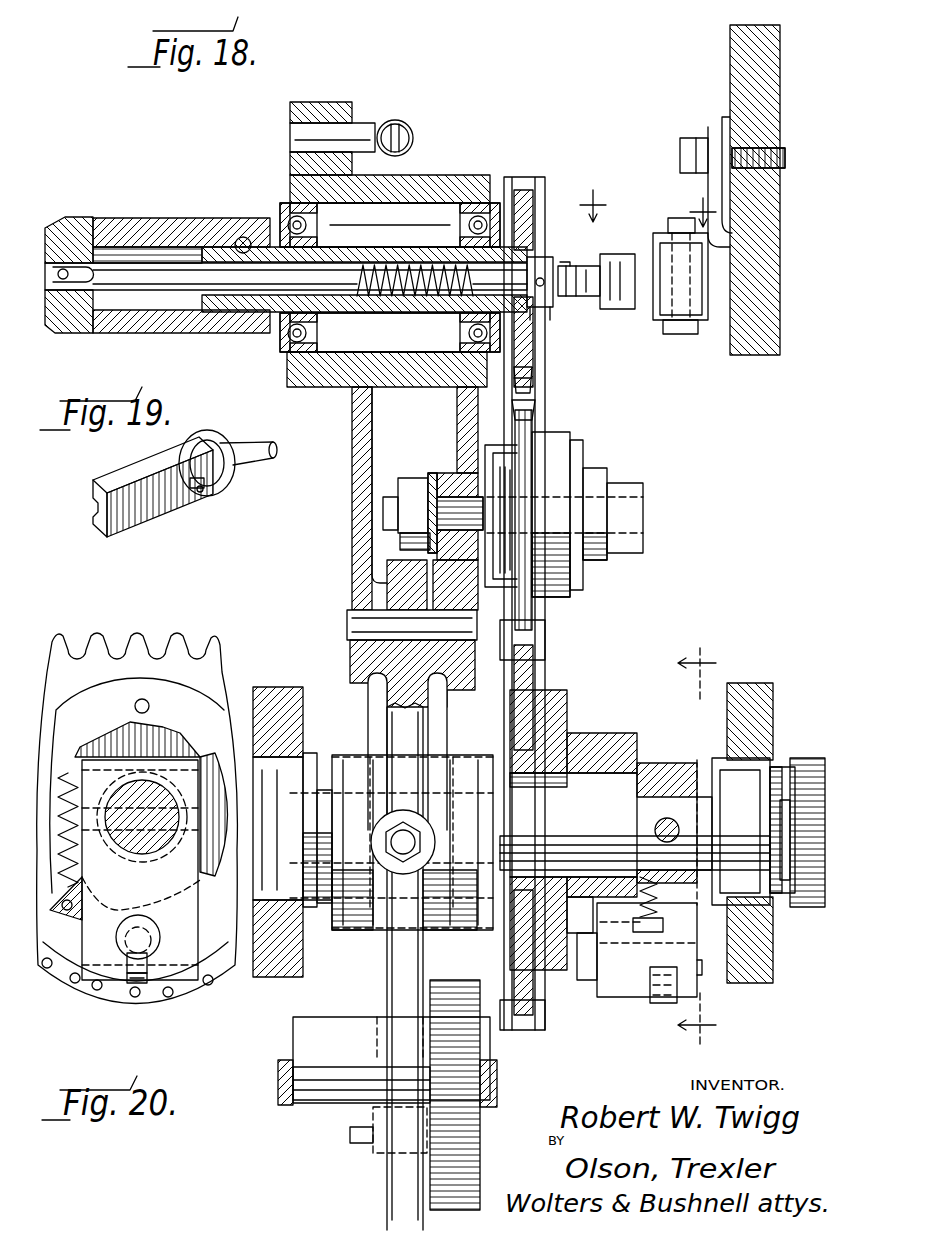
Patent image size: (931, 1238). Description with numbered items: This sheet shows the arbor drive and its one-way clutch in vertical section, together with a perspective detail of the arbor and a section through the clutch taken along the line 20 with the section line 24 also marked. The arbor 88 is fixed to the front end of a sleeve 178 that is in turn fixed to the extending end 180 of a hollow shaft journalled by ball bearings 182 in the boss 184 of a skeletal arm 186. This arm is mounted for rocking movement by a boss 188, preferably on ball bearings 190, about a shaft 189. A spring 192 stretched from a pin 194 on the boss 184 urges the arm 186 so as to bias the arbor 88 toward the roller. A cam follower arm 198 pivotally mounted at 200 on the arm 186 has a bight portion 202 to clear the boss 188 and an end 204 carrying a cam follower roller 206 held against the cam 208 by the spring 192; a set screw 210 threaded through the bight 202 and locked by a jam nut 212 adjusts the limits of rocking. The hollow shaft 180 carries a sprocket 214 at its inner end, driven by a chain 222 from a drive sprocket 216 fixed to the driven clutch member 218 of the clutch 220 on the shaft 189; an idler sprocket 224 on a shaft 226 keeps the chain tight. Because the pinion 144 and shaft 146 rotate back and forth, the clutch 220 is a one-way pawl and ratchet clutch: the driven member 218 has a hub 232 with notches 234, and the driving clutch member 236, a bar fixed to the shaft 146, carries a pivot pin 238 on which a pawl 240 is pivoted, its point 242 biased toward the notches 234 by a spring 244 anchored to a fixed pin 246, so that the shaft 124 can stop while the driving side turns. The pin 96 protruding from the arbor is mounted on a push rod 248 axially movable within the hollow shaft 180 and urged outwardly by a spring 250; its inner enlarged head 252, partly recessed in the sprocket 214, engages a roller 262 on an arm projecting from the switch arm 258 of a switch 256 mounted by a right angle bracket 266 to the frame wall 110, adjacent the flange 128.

In FIG. 18, the section line 20- 20 is at (711, 837).
In FIG. 18, the section line 24- 24 is at (648, 194).
In FIG. 18, the arbor 88 is at (55, 226).
In FIG. 19, the arbor 88 is at (132, 520).
In FIG. 18, the pin 96 is at (72, 262).
In FIG. 19, the pin 96 is at (191, 490).
In FIG. 18, the frame member or wall 110 is at (765, 272).
In FIG. 18, the shaft 124 is at (320, 1093).
In FIG. 18, the flange 128 is at (262, 985).
In FIG. 18, the pinion 144 is at (803, 758).
In FIG. 18, the shaft 146 is at (773, 810).
In FIG. 18, the sleeve 178 is at (140, 218).
In FIG. 18, the hollow shaft 180 is at (222, 245).
In FIG. 18, the ball bearings 182 is at (282, 212).
In FIG. 18, the boss 184 is at (425, 175).
In FIG. 18, the arm 186 is at (352, 478).
In FIG. 18, the boss 188 is at (358, 925).
In FIG. 18, the shaft 189 is at (607, 805).
In FIG. 18, the ball bearings 190 is at (373, 938).
In FIG. 18, the spring 192 is at (405, 122).
In FIG. 18, the pin 194 is at (352, 120).
In FIG. 18, the cam follower arm 198 is at (330, 680).
In FIG. 18, the pivot 200 is at (347, 612).
In FIG. 18, the bight portion 202 is at (462, 890).
In FIG. 18, the end 204 is at (390, 1040).
In FIG. 18, the cam follower roller 206 is at (432, 1155).
In FIG. 18, the cam 208 is at (465, 1042).
In FIG. 18, the set screw 210 is at (405, 832).
In FIG. 18, the jam nut 212 is at (420, 825).
In FIG. 18, the sprocket 214 is at (535, 195).
In FIG. 18, the drive sprocket 216 is at (522, 673).
In FIG. 20, the drive sprocket 216 is at (57, 675).
In FIG. 18, the driven clutch member 218 is at (567, 733).
In FIG. 18, the clutch 220 is at (620, 1006).
In FIG. 20, the clutch 220 is at (149, 664).
In FIG. 18, the chain 222 is at (540, 390).
In FIG. 18, the idler sprocket 224 is at (528, 453).
In FIG. 18, the shaft 226 is at (450, 503).
In FIG. 18, the hub 232 is at (640, 766).
In FIG. 18, the notches 234 is at (600, 732).
In FIG. 20, the notches 234 is at (172, 740).
In FIG. 18, the driving clutch member 236 is at (682, 763).
In FIG. 20, the driving clutch member 236 is at (187, 973).
In FIG. 18, the pivot pin 238 is at (700, 973).
In FIG. 18, the pawl 240 is at (616, 903).
In FIG. 20, the pawl 240 is at (73, 930).
In FIG. 20, the point 242 is at (141, 872).
In FIG. 20, the spring 244 is at (102, 778).
In FIG. 20, the fixed pin 246 is at (114, 707).
In FIG. 18, the push rod 248 is at (148, 292).
In FIG. 19, the push rod 248 is at (254, 447).
In FIG. 18, the spring 250 is at (390, 277).
In FIG. 18, the enlarged head 252 is at (548, 318).
In FIG. 18, the switch 256 is at (697, 305).
In FIG. 18, the switch arm 258 is at (618, 262).
In FIG. 18, the roller 262 is at (568, 266).
In FIG. 18, the right angle bracket 266 is at (722, 216).